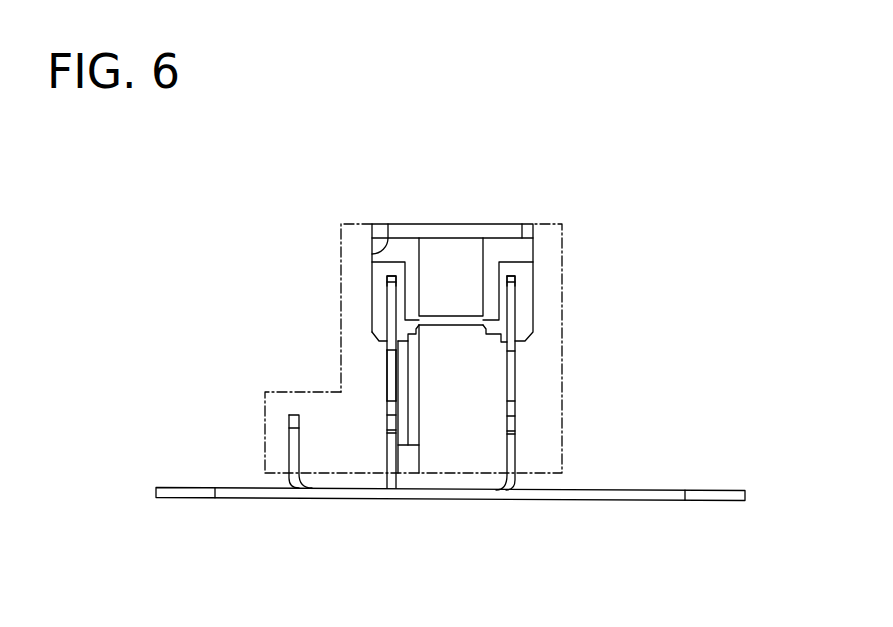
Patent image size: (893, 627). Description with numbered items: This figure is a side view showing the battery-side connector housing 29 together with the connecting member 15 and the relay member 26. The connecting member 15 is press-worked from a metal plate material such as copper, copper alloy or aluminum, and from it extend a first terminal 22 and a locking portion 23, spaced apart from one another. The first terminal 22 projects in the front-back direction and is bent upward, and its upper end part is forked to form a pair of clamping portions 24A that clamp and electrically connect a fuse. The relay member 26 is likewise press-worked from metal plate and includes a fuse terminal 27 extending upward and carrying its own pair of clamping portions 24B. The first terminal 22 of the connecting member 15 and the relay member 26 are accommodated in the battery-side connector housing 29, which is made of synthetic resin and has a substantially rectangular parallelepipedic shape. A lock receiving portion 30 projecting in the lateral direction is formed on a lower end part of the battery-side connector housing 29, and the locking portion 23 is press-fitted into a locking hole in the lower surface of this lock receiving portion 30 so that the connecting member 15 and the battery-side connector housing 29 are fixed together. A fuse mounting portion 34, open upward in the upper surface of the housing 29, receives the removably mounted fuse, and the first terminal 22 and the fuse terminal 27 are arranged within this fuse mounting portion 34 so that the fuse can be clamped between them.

The connecting member 15 is at (599, 497).
The first terminal 22 is at (512, 364).
The locking portion 23 is at (292, 458).
The clamping portions 24A is at (512, 284).
The clamping portions 24B is at (393, 284).
The relay member 26 is at (388, 473).
The fuse terminal 27 is at (390, 370).
The battery-side connector housing 29 is at (545, 247).
The lock receiving portion 30 is at (283, 403).
The fuse mounting portion 34 is at (382, 227).